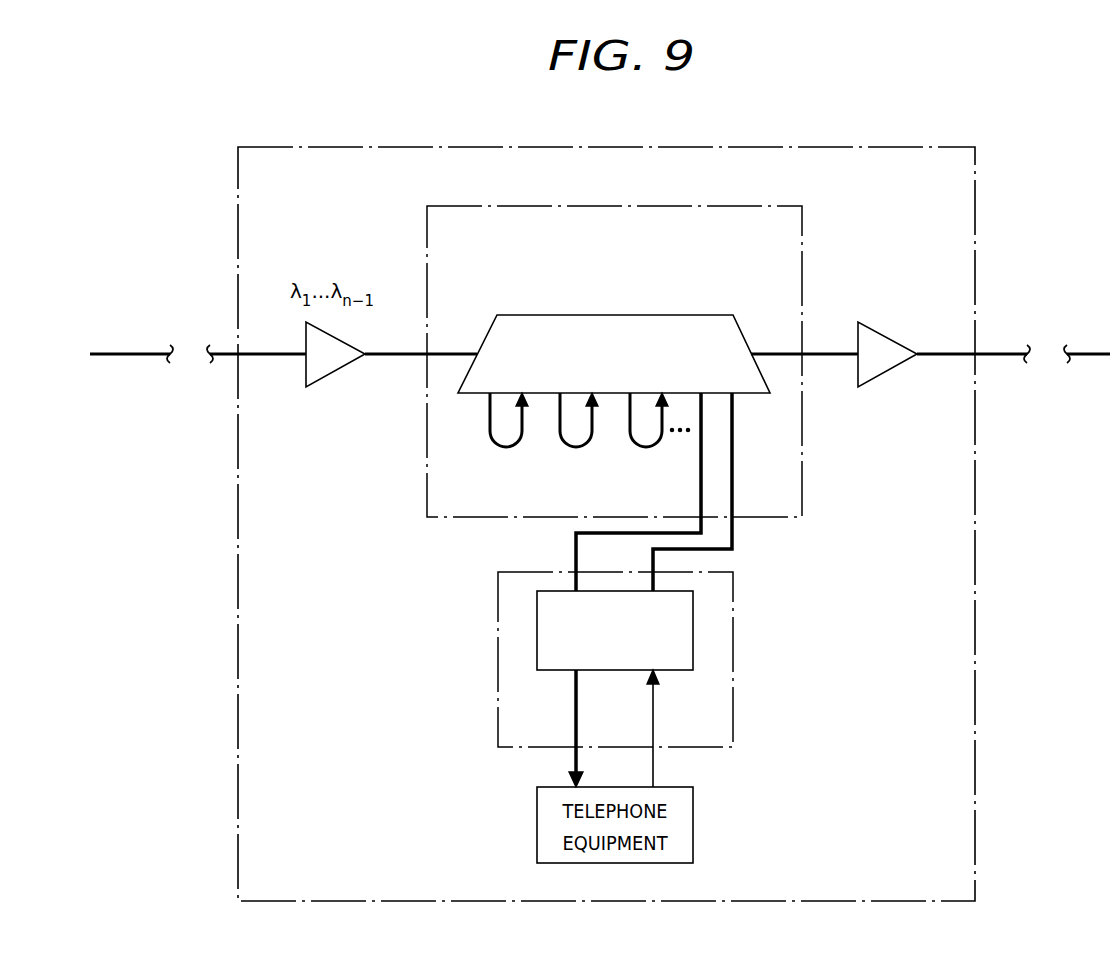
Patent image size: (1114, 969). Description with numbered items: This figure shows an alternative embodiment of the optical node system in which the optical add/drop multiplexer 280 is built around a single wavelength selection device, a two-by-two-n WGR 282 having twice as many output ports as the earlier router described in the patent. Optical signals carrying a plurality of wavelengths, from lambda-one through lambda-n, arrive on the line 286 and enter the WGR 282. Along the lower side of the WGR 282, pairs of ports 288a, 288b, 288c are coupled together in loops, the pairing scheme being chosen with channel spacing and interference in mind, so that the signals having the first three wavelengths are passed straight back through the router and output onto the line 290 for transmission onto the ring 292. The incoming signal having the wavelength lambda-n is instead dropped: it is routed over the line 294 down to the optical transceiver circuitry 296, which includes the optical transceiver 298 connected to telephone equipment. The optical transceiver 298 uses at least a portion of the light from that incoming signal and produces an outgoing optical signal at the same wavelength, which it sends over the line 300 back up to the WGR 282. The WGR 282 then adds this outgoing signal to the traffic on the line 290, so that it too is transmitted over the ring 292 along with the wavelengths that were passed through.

The optical add/drop multiplexer 280 is at (802, 221).
The 2×2n WGR 282 is at (614, 313).
The line 286 is at (386, 357).
The coupled pair of ports 288a is at (506, 447).
The coupled pair of ports 288b is at (576, 447).
The coupled pair of ports 288c is at (646, 447).
The line 290 is at (828, 352).
The ring 292 is at (1000, 352).
The line 294 is at (576, 562).
The optical transceiver circuitry 296 is at (733, 658).
The optical transceiver 298 is at (537, 632).
The line 300 is at (735, 530).